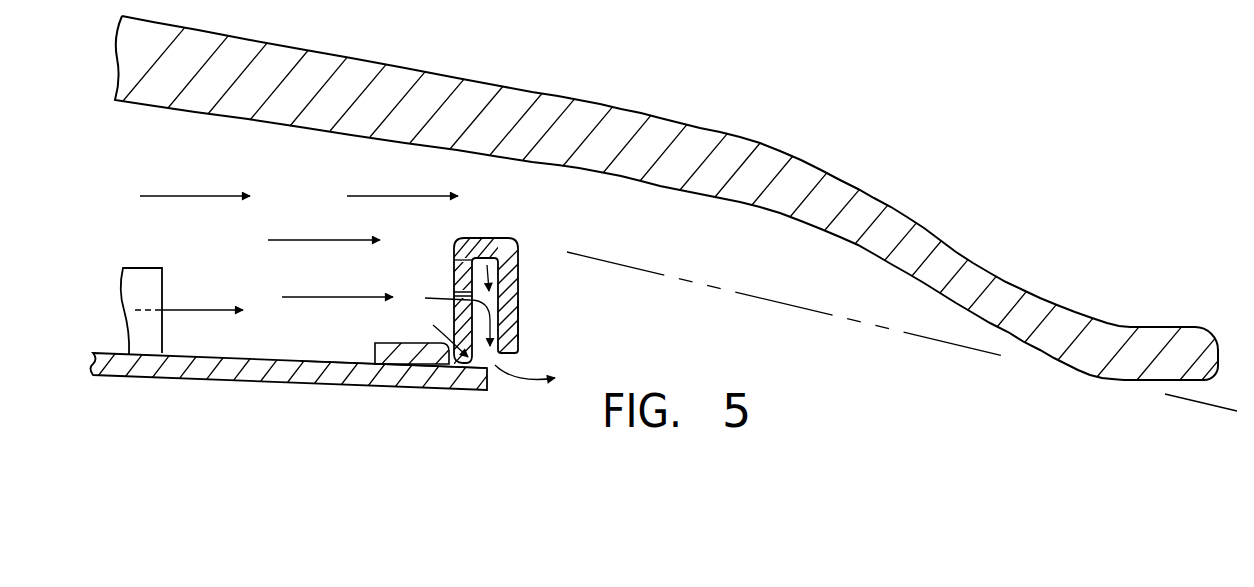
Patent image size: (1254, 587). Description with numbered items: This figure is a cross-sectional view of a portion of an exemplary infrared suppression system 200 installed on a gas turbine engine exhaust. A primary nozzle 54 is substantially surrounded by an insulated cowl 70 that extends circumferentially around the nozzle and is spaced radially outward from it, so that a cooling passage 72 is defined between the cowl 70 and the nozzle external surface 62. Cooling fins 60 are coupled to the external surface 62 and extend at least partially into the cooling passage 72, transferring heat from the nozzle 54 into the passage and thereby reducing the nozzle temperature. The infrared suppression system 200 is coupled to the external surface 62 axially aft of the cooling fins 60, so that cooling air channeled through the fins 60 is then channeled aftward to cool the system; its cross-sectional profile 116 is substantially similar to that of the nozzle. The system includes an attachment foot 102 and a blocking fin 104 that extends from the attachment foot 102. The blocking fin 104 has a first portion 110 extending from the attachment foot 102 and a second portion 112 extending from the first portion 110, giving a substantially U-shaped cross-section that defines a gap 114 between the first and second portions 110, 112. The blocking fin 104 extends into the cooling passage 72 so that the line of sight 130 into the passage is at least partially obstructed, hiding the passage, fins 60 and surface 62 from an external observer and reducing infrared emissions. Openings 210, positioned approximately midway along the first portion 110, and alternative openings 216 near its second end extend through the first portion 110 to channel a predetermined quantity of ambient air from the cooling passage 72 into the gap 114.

The primary nozzle 54 is at (302, 387).
The cooling fins 60 is at (115, 259).
The external surface 62 is at (320, 359).
The insulated cowl 70 is at (680, 122).
The cooling passage 72 is at (247, 259).
The attachment foot 102 is at (392, 350).
The blocking fin 104 is at (529, 248).
The first portion 110 is at (455, 274).
The second portion 112 is at (519, 279).
The gap 114 is at (487, 258).
The cross-sectional profile 116 is at (540, 305).
The line of sight 130 is at (798, 308).
The infrared suppression system 200 is at (670, 339).
The openings 210 is at (457, 297).
The openings 216 is at (478, 244).